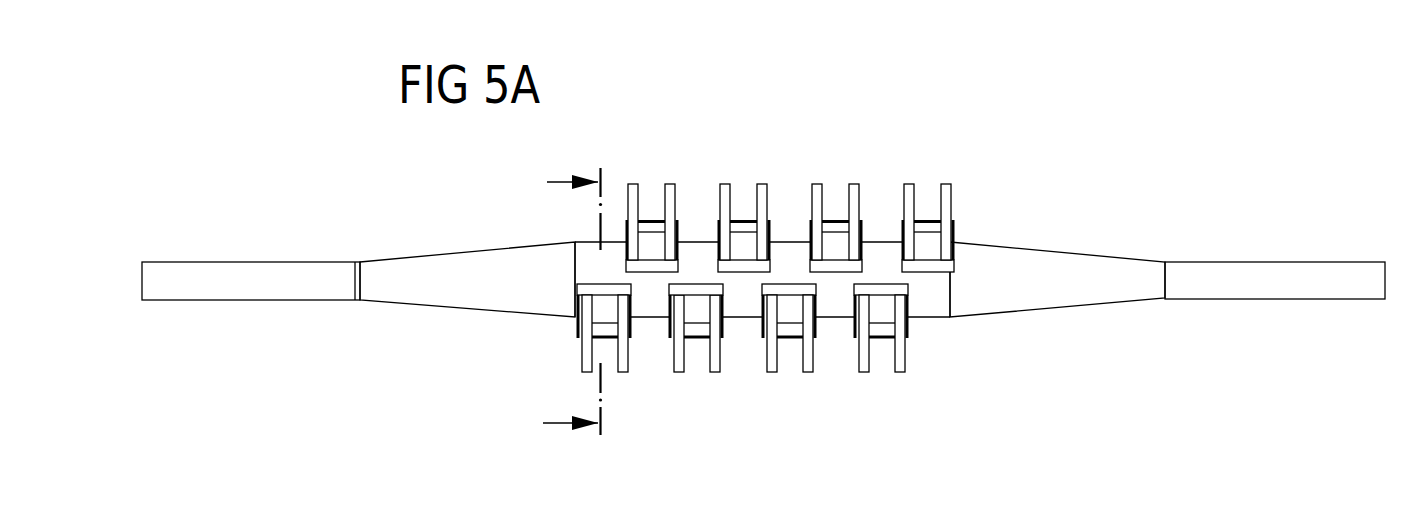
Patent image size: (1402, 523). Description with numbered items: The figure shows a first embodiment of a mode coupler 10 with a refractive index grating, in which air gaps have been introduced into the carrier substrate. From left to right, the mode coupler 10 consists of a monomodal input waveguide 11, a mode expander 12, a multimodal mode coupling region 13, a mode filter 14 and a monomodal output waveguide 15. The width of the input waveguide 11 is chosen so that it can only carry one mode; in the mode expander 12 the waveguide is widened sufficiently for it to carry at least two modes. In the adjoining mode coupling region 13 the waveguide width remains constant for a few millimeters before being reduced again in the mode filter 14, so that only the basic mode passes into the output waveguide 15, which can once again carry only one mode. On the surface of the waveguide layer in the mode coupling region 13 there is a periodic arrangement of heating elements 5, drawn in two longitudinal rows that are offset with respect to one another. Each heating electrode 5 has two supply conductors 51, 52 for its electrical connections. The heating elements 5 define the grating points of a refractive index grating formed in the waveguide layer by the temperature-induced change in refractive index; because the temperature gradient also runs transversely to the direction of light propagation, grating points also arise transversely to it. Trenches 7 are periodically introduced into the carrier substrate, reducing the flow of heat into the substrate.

The mode coupler 10 is at (812, 143).
The monomodal input waveguide 11 is at (284, 262).
The mode expander 12 is at (447, 250).
The multimodal mode coupling region 13 is at (925, 318).
The mode filter 14 is at (1083, 252).
The monomodal output waveguide 15 is at (1262, 260).
The heating element 5 is at (937, 247).
The supply conductor 51 is at (911, 192).
The supply conductor 52 is at (949, 193).
The trench 7 is at (707, 288).